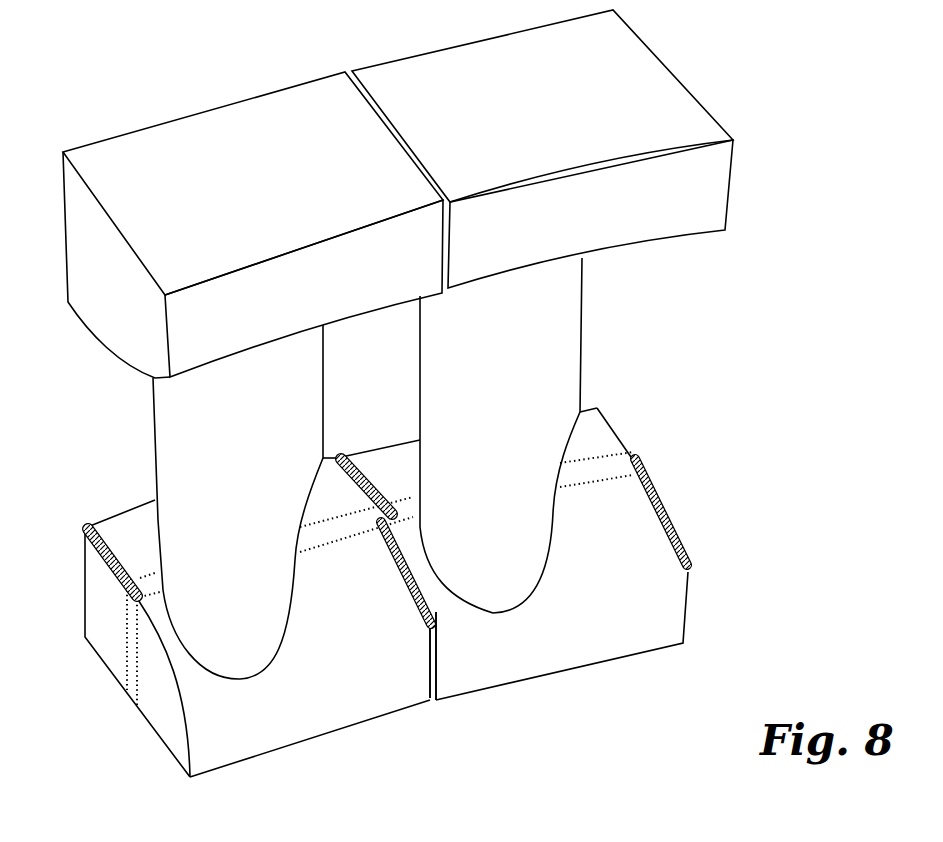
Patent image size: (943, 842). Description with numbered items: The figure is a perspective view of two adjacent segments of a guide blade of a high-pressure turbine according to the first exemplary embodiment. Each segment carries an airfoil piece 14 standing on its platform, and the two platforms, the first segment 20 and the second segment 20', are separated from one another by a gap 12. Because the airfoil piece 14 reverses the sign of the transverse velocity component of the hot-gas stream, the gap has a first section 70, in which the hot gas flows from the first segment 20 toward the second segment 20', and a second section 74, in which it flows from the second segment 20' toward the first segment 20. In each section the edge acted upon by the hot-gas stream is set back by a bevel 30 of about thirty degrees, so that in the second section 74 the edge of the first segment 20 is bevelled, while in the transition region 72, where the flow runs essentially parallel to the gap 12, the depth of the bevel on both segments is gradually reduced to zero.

The gap 12 is at (437, 702).
The airfoil piece 14 is at (375, 468).
The first segment 20 is at (562, 554).
The second segment 20' is at (257, 608).
The bevel 30 is at (92, 526).
The first section of the gap 70 is at (167, 730).
The transition region 72 is at (130, 698).
The second section of the gap 74 is at (103, 652).